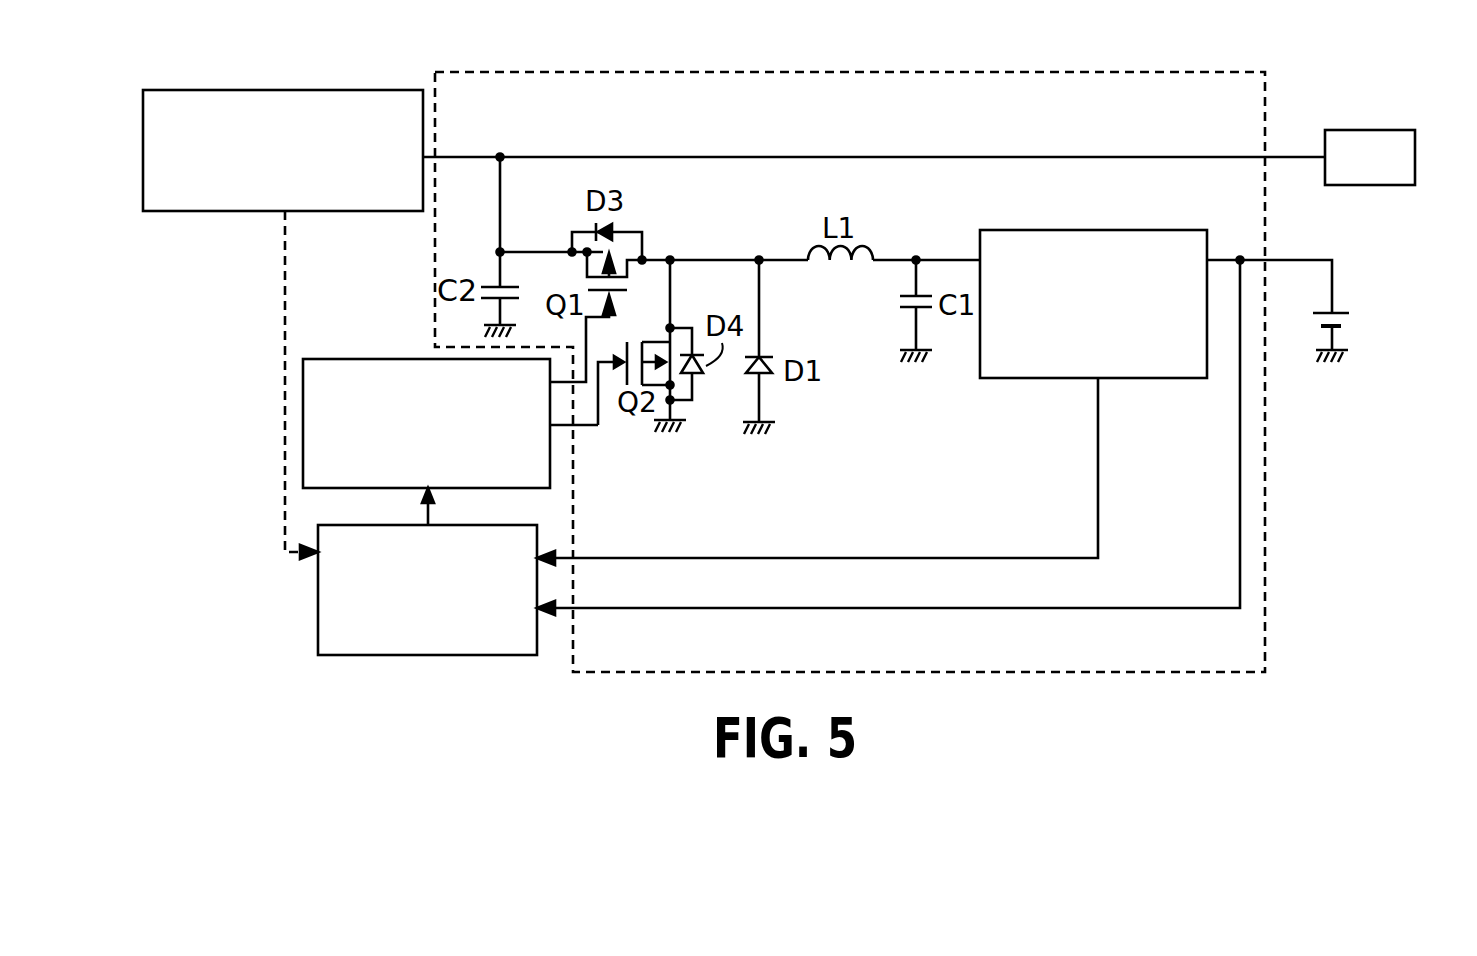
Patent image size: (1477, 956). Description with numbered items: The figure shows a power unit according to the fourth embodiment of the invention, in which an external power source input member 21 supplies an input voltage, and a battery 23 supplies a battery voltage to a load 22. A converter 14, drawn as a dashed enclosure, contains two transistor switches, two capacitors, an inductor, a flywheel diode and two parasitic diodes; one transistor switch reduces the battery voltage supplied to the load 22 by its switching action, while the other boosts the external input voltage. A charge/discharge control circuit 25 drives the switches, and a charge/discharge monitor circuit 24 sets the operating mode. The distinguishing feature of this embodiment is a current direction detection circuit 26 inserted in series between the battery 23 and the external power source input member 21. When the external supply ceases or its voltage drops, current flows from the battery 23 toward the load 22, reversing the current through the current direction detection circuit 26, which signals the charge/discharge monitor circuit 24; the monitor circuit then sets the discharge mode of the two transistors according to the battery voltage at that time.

The converter 14 is at (700, 70).
The external power source input member 21 is at (276, 90).
The load 22 is at (1362, 130).
The battery 23 is at (1333, 313).
The charge/discharge monitor circuit 24 is at (337, 655).
The charge/discharge control circuit 25 is at (328, 359).
The current direction detection circuit 26 is at (995, 230).